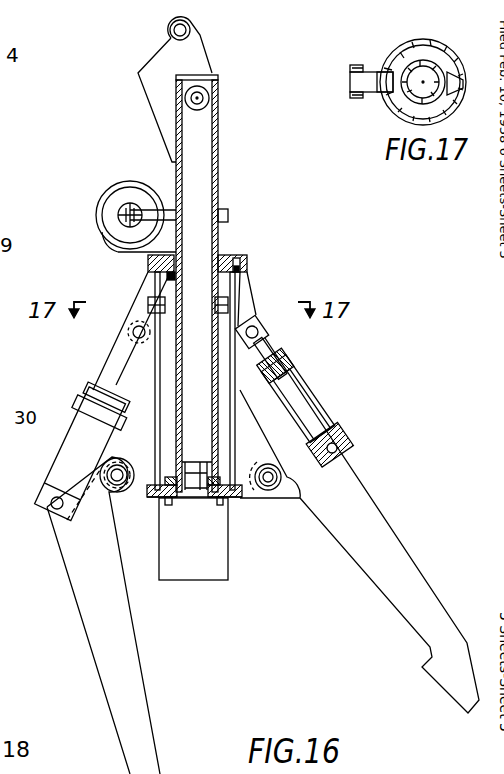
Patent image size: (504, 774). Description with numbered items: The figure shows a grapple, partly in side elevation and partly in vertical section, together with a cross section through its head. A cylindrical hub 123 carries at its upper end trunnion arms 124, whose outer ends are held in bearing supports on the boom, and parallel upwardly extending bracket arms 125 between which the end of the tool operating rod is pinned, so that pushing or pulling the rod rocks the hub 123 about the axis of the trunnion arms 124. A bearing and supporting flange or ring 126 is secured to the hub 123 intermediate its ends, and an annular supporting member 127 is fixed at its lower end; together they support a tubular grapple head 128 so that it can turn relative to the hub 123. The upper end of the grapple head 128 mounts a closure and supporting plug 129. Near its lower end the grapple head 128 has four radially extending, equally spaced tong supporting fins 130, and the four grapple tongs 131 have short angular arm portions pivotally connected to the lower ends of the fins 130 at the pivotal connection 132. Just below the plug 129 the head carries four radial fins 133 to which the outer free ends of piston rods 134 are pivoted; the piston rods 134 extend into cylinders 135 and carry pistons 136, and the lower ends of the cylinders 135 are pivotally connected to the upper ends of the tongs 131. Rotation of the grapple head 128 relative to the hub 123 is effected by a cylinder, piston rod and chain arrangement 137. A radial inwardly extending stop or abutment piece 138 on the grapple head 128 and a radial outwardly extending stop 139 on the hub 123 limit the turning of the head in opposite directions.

In FIG. 16, the cylindrical hub 123 is at (218, 175).
In FIG. 17, the cylindrical hub 123 is at (413, 63).
In FIG. 16, the trunnion arms 124 is at (209, 98).
In FIG. 16, the bracket arms 125 is at (187, 62).
In FIG. 16, the bearing and supporting flange or ring 126 is at (248, 262).
In FIG. 16, the annular supporting member 127 is at (233, 500).
In FIG. 16, the tubular grapple head 128 is at (157, 360).
In FIG. 17, the tubular grapple head 128 is at (392, 60).
In FIG. 16, the closure and supporting plug 129 is at (236, 258).
In FIG. 16, the tong supporting fins 130 is at (193, 412).
In FIG. 16, the grapple tongs 131 is at (118, 647).
In FIG. 16, the pivotal connection 132 is at (118, 482).
In FIG. 16, the radial fins 133 is at (146, 288).
In FIG. 17, the radial fins 133 is at (352, 66).
In FIG. 16, the piston rods 134 is at (108, 378).
In FIG. 16, the cylinders 135 is at (66, 452).
In FIG. 16, the pistons 136 is at (322, 424).
In FIG. 16, the cylinder, piston rod and chain arrangement 137 is at (160, 165).
In FIG. 16, the stop or abutment piece 138 is at (148, 305).
In FIG. 17, the stop or abutment piece 138 is at (378, 80).
In FIG. 17, the stop 139 is at (440, 46).